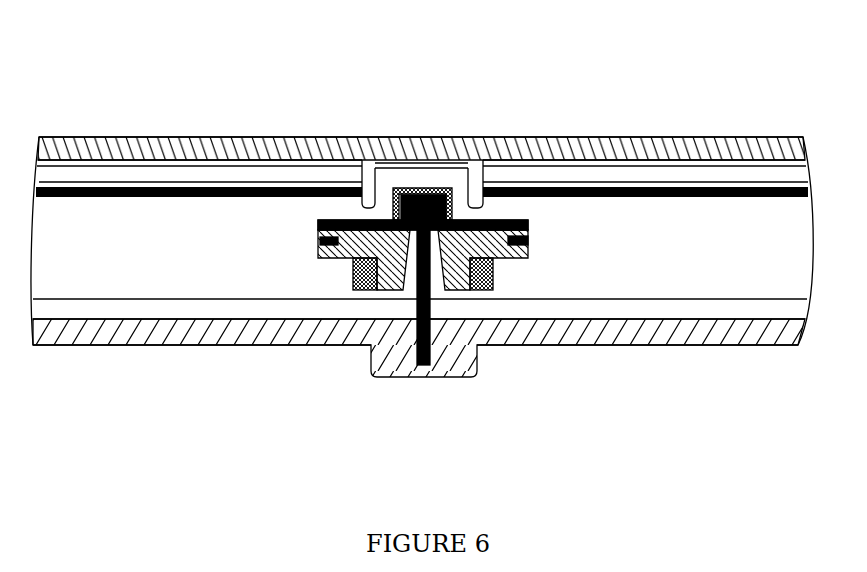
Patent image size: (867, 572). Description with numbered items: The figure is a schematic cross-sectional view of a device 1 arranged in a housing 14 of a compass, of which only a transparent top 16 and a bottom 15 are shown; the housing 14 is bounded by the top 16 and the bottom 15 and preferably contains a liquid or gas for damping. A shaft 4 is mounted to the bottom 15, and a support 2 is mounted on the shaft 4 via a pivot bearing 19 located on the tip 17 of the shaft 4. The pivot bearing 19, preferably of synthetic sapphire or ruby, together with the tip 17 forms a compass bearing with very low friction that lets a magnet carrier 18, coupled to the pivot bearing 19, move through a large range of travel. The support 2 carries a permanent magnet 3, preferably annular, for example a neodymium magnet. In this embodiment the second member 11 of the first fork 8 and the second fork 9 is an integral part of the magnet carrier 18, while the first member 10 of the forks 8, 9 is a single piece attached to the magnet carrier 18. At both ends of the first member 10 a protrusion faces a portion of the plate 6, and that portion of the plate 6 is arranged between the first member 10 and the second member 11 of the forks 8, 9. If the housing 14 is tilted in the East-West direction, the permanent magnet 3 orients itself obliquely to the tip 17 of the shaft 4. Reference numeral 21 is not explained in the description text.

The device 1 is at (577, 247).
The support 2 is at (380, 202).
The permanent magnet 3 is at (495, 286).
The shaft 4 is at (440, 282).
The plate 6 is at (327, 259).
The first fork 8 is at (533, 250).
The second fork 9 is at (318, 253).
The first member 10 is at (340, 220).
The second member 11 is at (332, 260).
The housing 14 is at (225, 328).
The bottom 15 is at (646, 342).
The transparent top 16 is at (610, 137).
The tip 17 is at (446, 190).
The magnet carrier 18 is at (457, 288).
The pivot bearing 19 is at (417, 192).
The plate edge 21 is at (318, 220).